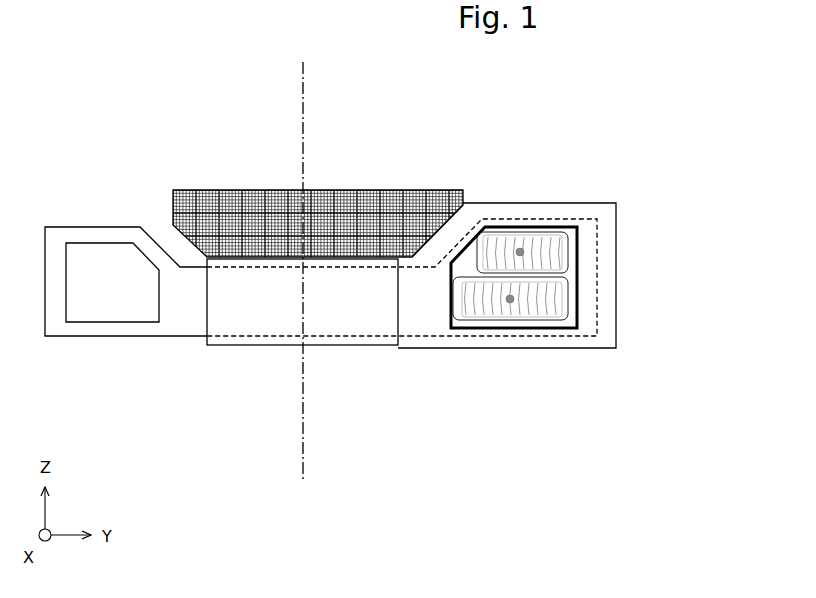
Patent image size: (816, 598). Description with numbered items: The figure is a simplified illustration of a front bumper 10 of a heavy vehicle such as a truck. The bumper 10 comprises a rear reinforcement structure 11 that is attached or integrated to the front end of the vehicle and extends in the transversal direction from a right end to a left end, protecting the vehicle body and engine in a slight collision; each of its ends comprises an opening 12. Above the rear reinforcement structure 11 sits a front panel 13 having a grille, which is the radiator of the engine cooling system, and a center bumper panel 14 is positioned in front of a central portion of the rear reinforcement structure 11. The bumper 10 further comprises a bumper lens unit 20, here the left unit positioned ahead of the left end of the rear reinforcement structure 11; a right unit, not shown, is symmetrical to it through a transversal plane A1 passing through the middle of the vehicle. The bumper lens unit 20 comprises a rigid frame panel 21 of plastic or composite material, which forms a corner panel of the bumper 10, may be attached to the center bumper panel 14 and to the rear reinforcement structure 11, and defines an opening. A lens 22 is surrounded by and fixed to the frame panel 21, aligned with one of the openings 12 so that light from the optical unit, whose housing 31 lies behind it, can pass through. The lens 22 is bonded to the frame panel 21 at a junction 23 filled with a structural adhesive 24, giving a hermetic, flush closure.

The bumper 10 is at (161, 111).
The rear reinforcement structure 11 is at (167, 328).
The opening 12 is at (93, 255).
The front panel 13 is at (292, 200).
The center bumper panel 14 is at (248, 305).
The bumper lens unit 20 is at (588, 385).
The frame panel 21 is at (495, 342).
The lens 22 is at (567, 329).
The junction 23 is at (489, 219).
The structural adhesive 24 is at (463, 330).
The housing 31 is at (547, 253).
The transversal plane A1 is at (305, 453).